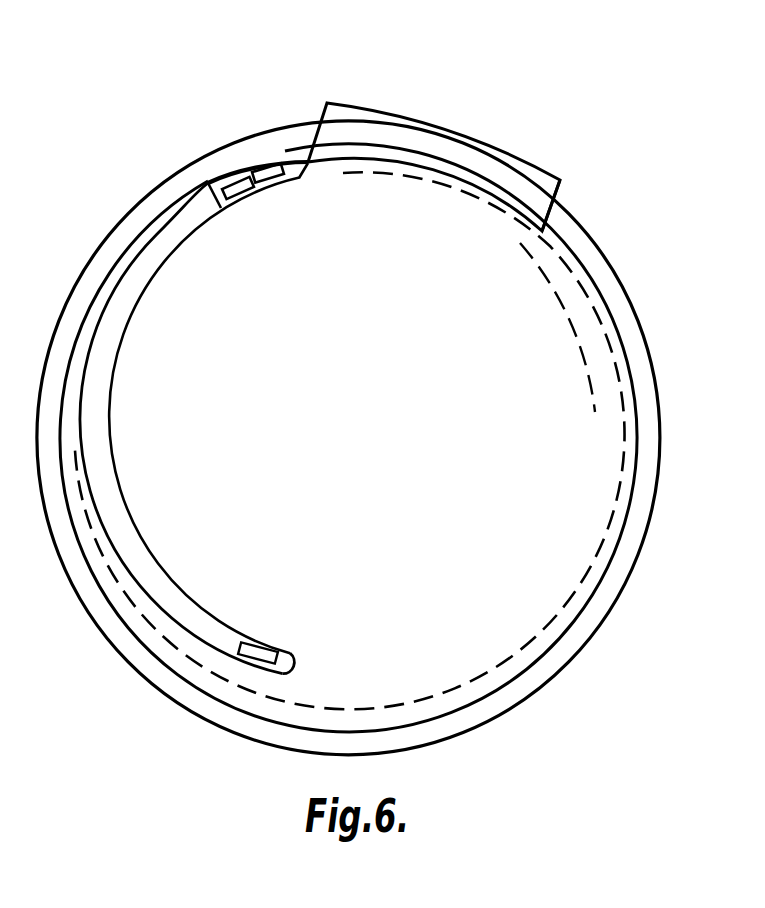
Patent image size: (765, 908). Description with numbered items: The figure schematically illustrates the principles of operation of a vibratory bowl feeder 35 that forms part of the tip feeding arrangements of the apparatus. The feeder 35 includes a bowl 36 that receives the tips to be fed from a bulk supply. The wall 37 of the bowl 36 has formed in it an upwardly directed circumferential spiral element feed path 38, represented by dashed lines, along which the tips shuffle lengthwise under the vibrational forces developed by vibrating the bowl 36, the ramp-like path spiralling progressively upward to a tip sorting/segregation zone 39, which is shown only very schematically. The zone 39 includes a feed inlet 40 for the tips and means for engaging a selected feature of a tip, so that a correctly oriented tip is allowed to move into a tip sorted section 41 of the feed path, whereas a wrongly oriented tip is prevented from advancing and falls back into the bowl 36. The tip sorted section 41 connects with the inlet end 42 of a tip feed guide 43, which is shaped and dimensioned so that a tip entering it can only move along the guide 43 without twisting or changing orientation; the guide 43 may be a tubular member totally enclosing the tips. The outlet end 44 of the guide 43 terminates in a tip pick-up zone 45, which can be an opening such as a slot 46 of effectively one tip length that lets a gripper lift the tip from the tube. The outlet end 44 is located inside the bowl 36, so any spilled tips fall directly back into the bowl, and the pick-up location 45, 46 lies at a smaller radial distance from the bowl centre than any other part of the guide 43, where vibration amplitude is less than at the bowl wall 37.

The vibratory bowl feeder 35 is at (561, 677).
The bowl 36 is at (364, 491).
The wall 37 is at (106, 618).
The spiral element feed path 38 is at (608, 535).
The tip sorting/segregation zone 39 is at (417, 121).
The feed inlet 40 is at (549, 205).
The tip sorted section 41 is at (284, 163).
The inlet end 42 is at (208, 183).
The tip feed guide 43 is at (112, 425).
The outlet end 44 is at (244, 640).
The tip pick-up zone 45 is at (291, 655).
The slot 46 is at (266, 650).